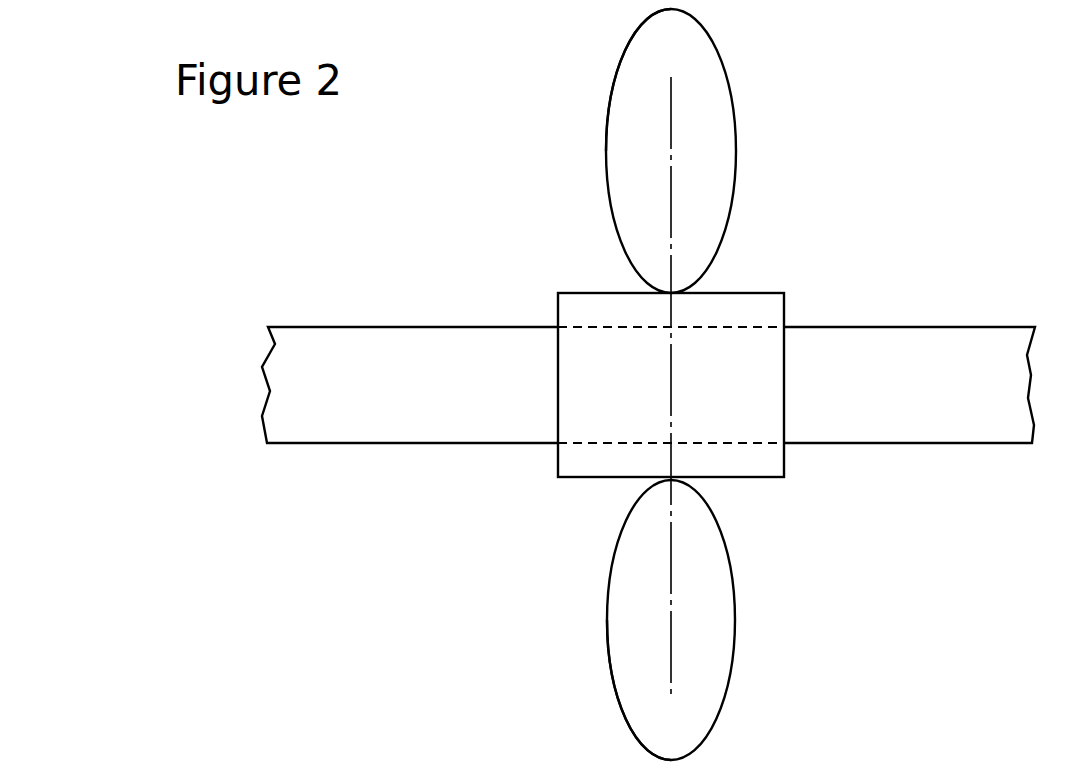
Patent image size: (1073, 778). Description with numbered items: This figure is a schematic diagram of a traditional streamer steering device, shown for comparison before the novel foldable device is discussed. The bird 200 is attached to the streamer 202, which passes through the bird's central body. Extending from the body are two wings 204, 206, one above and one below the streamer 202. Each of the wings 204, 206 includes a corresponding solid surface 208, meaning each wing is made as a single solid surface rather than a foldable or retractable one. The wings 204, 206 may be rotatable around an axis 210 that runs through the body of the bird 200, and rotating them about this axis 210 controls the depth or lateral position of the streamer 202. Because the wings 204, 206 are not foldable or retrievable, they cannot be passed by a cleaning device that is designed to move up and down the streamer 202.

The bird 200 is at (778, 480).
The streamer 202 is at (966, 438).
The wing 204 is at (718, 127).
The wing 206 is at (718, 642).
The solid surface 208 is at (648, 62).
The axis 210 is at (671, 175).